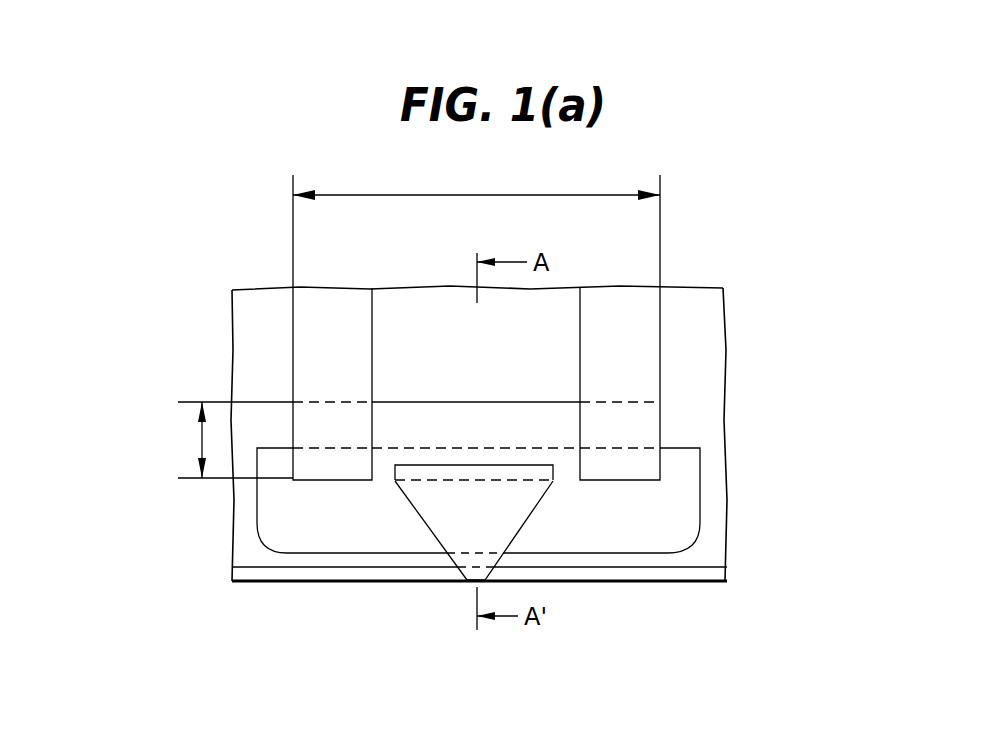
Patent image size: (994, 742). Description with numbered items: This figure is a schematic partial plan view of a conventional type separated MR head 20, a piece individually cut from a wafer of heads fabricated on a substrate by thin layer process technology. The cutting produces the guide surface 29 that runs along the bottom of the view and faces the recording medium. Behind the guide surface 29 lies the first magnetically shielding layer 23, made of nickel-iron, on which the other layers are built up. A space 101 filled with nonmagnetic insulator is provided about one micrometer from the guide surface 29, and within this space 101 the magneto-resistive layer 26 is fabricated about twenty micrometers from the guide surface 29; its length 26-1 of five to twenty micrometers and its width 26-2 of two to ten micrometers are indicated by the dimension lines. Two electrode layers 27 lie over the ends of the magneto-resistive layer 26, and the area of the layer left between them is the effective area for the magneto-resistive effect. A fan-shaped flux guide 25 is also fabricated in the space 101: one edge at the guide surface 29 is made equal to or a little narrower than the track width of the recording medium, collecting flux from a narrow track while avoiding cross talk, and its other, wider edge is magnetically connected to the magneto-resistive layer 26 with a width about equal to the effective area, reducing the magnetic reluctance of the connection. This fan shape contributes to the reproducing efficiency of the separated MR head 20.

The separated MR head 20 is at (789, 341).
The first magnetically shielding layer 23 is at (313, 560).
The flux guide 25 is at (530, 497).
The magneto-resistive layer 26 is at (383, 484).
The length of MR layer 26-1 is at (476, 182).
The width of MR layer 26-2 is at (200, 437).
The electrode layers 27 is at (327, 297).
The guide surface 29 is at (610, 586).
The space 101 is at (700, 497).